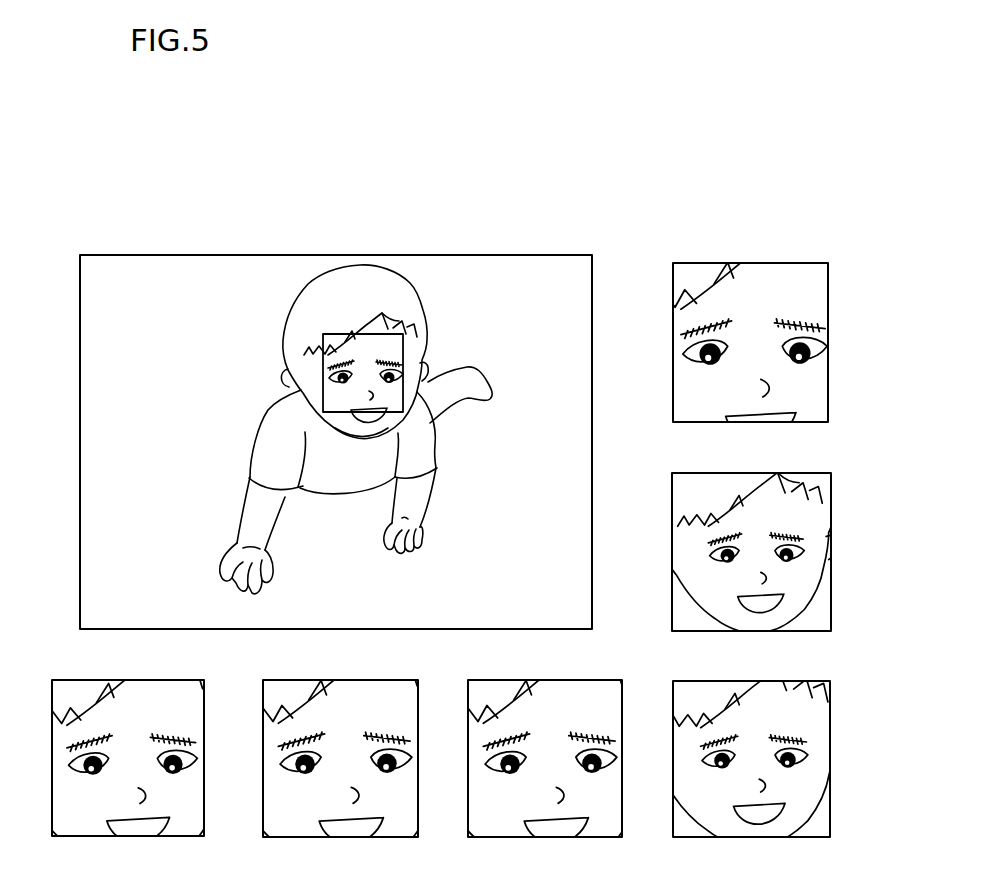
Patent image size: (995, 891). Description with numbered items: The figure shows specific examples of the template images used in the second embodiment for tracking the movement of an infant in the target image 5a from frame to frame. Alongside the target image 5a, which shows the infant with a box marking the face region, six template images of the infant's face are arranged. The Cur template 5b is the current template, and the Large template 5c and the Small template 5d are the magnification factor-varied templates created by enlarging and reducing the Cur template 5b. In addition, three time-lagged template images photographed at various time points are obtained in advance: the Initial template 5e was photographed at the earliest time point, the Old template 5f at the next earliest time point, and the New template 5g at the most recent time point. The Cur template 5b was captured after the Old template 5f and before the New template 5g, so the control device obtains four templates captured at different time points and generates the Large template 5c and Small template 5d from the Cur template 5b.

The target image 5a is at (80, 344).
The Cur template 5b is at (388, 837).
The Large template 5c is at (828, 313).
The Small template 5d is at (831, 550).
The Initial template 5e is at (830, 758).
The Old template 5f is at (175, 837).
The New template 5g is at (592, 837).